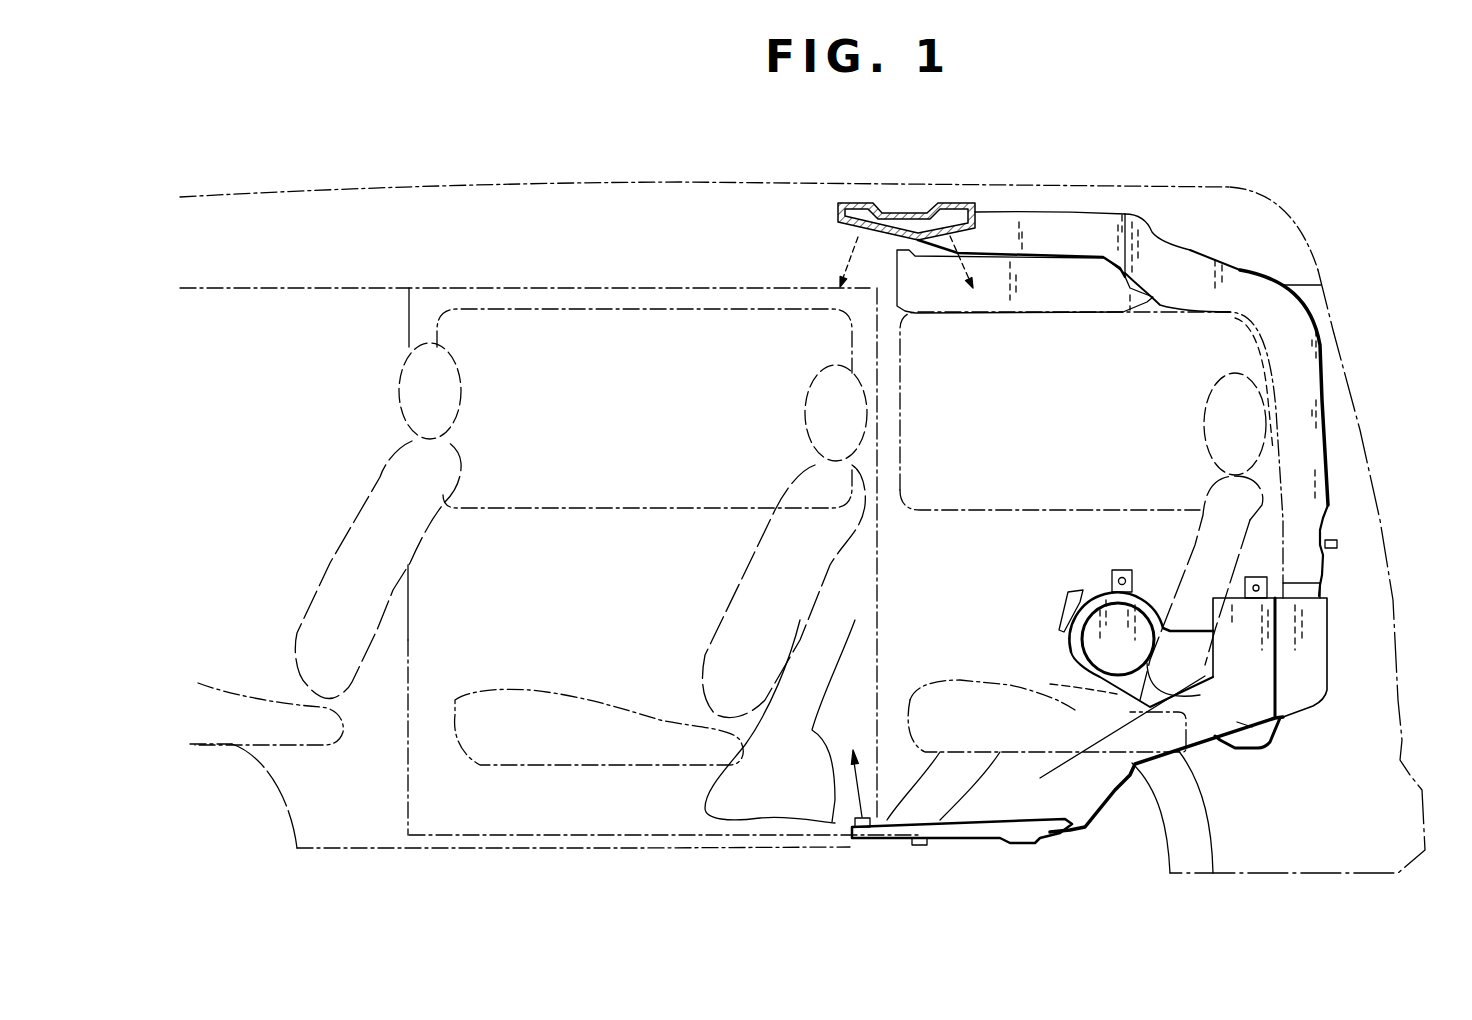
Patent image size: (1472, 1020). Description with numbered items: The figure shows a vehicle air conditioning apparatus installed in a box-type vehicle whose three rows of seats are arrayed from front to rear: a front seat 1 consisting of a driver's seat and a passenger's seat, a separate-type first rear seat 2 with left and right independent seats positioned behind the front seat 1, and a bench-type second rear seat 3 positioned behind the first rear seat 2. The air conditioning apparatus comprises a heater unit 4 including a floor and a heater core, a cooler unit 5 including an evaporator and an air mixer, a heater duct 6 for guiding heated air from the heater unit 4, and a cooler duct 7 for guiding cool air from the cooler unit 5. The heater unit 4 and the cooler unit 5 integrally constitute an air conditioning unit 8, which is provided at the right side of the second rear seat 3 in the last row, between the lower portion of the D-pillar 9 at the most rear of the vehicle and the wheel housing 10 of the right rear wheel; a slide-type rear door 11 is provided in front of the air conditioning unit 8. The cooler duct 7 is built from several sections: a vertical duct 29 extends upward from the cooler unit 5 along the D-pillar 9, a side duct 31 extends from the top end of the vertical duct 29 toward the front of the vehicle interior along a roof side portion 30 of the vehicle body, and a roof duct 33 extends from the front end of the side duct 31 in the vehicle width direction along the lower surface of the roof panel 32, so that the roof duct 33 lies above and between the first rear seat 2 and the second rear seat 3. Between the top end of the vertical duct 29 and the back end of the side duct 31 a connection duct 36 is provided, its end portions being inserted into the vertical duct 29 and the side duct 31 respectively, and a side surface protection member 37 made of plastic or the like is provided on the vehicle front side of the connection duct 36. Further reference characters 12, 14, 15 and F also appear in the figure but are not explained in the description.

The front seat 1 is at (470, 443).
The first rear seat 2 is at (800, 455).
The second rear seat 3 is at (1192, 488).
The heater unit 4 is at (1098, 600).
The cooler unit 5 is at (1318, 648).
The heater duct 6 is at (1135, 805).
The cooler duct 7 is at (1130, 208).
The air conditioning unit 8 is at (1310, 720).
The D-pillar 9 is at (1352, 375).
The wheel housing 10 is at (1025, 682).
The rear door 11 is at (640, 280).
The bracket 12 is at (1270, 730).
The side sill 14 is at (1050, 840).
The floor cross member 15 is at (912, 846).
The vertical duct 29 is at (1322, 485).
The roof side portion 30 is at (1210, 215).
The side duct 31 is at (1047, 210).
The roof panel 32 is at (746, 183).
The roof duct 33 is at (898, 202).
The connection duct 36 is at (1185, 265).
The side surface protection member 37 is at (1032, 306).
The load direction F is at (822, 838).